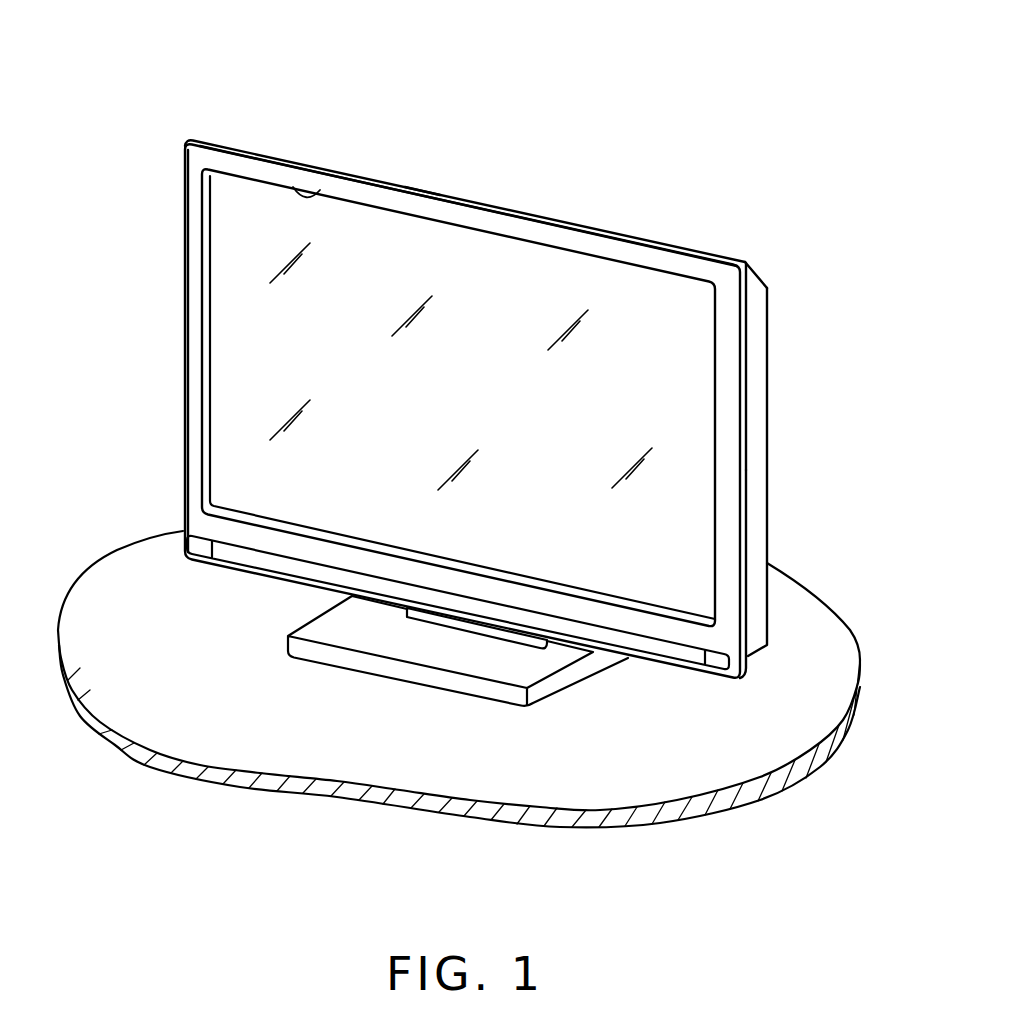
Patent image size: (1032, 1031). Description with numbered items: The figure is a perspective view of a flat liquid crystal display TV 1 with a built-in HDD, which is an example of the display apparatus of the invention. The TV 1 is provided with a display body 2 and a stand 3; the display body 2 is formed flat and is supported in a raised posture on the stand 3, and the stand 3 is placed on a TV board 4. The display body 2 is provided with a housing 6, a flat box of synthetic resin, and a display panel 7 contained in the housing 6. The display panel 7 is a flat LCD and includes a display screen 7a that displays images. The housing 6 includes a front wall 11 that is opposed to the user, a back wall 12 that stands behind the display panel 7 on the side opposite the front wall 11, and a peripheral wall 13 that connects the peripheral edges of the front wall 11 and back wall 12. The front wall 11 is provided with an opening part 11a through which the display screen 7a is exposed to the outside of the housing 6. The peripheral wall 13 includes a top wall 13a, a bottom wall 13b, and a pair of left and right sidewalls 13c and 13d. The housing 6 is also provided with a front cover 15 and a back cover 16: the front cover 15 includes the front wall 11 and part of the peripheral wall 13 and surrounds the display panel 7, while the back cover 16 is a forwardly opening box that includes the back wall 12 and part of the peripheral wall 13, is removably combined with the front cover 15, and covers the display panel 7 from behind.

The LCD TV 1 is at (770, 103).
The display body 2 is at (604, 223).
The stand 3 is at (495, 705).
The TV board 4 is at (292, 752).
The housing 6 is at (422, 197).
The display panel 7 is at (634, 303).
The display screen 7a is at (461, 366).
The front wall 11 is at (189, 368).
The opening part 11a is at (302, 193).
The back wall 12 is at (770, 397).
The peripheral wall 13 is at (742, 478).
The top wall 13a is at (487, 205).
The bottom wall 13b is at (637, 660).
The sidewall 13c is at (183, 300).
The sidewall 13d is at (742, 540).
The front cover 15 is at (553, 236).
The back cover 16 is at (757, 291).